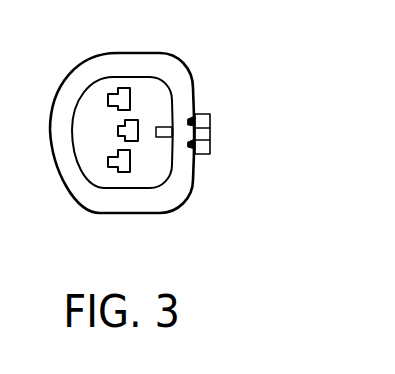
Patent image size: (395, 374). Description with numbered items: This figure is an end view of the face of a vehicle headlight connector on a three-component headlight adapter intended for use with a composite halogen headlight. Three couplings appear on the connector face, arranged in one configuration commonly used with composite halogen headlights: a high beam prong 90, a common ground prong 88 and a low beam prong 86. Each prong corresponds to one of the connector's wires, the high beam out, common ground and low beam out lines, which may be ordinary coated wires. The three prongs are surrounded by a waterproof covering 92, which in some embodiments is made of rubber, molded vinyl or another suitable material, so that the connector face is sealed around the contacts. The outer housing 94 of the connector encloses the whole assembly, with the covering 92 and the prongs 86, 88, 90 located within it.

The low beam prong 86 is at (92, 221).
The common ground prong 88 is at (125, 138).
The high beam prong 90 is at (147, 33).
The waterproof covering 92 is at (209, 55).
The outer housing of connector socket 94 is at (173, 247).